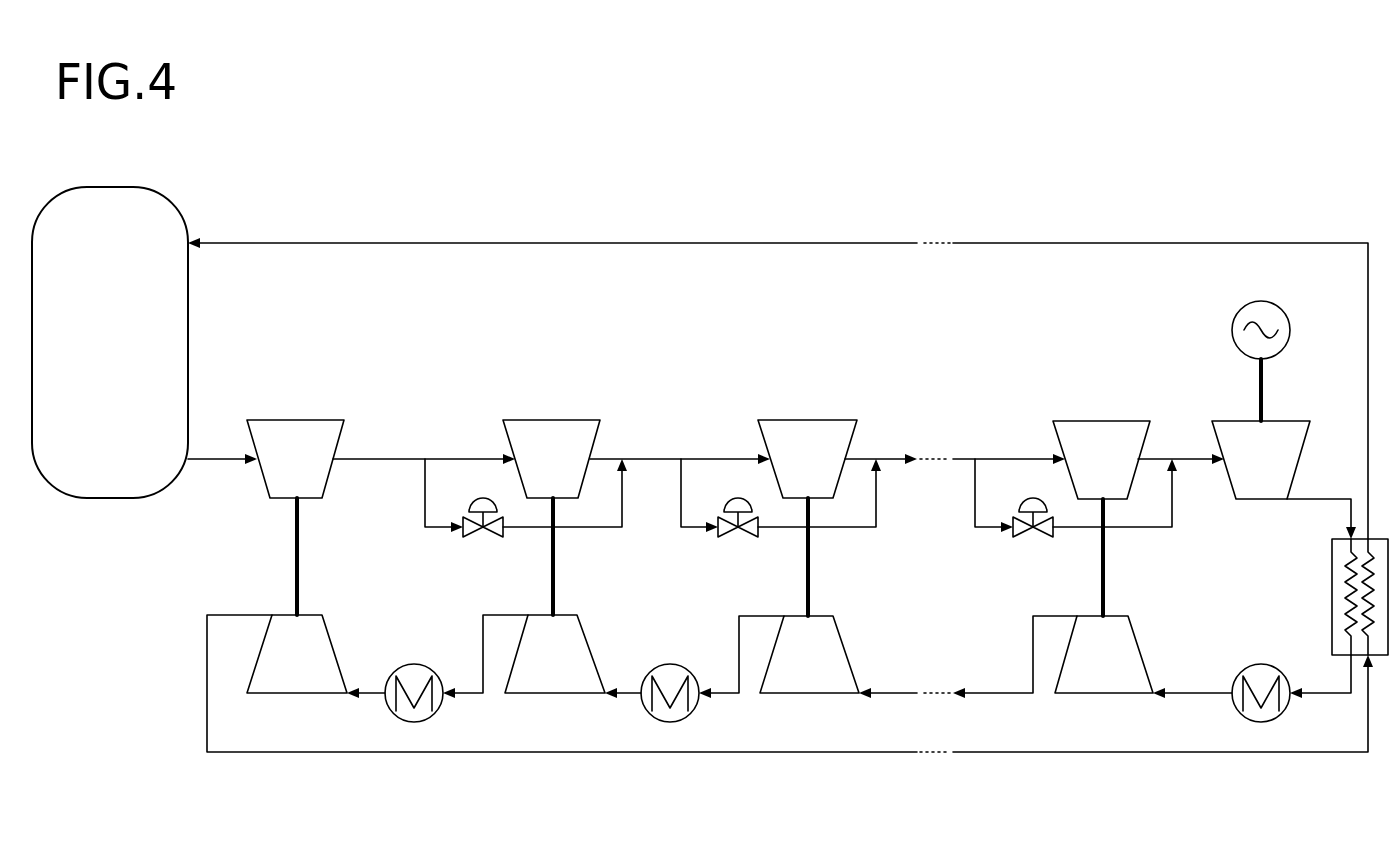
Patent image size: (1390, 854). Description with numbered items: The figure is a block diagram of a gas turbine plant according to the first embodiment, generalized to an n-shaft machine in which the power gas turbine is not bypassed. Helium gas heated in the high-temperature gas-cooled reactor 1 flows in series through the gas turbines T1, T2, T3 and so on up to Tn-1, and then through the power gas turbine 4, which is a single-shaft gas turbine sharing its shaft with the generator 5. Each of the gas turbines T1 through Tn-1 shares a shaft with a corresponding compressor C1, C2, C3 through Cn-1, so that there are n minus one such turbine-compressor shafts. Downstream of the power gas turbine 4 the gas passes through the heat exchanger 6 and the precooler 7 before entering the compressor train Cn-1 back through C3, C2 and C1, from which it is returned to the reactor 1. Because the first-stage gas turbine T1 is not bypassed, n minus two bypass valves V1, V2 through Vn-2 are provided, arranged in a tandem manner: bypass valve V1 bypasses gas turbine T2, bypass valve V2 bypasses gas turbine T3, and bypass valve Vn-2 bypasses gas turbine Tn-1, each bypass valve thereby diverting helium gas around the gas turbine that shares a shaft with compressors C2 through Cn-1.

The high-temperature gas-cooled reactor 1 is at (188, 318).
The power gas turbine 4 is at (1290, 421).
The generator 5 is at (1256, 302).
The heat exchanger 6 is at (1332, 598).
The precooler 7 is at (1263, 665).
The first-stage gas turbine T1 is at (307, 420).
The gas turbine T2 is at (562, 420).
The gas turbine T3 is at (818, 420).
The gas turbine Tn-1 is at (1128, 421).
The bypass valve V1 is at (490, 537).
The bypass valve V2 is at (745, 537).
The bypass valve Vn-2 is at (1040, 537).
The compressor C1 is at (320, 615).
The compressor C2 is at (577, 615).
The compressor C3 is at (833, 616).
The compressor Cn-1 is at (1100, 693).